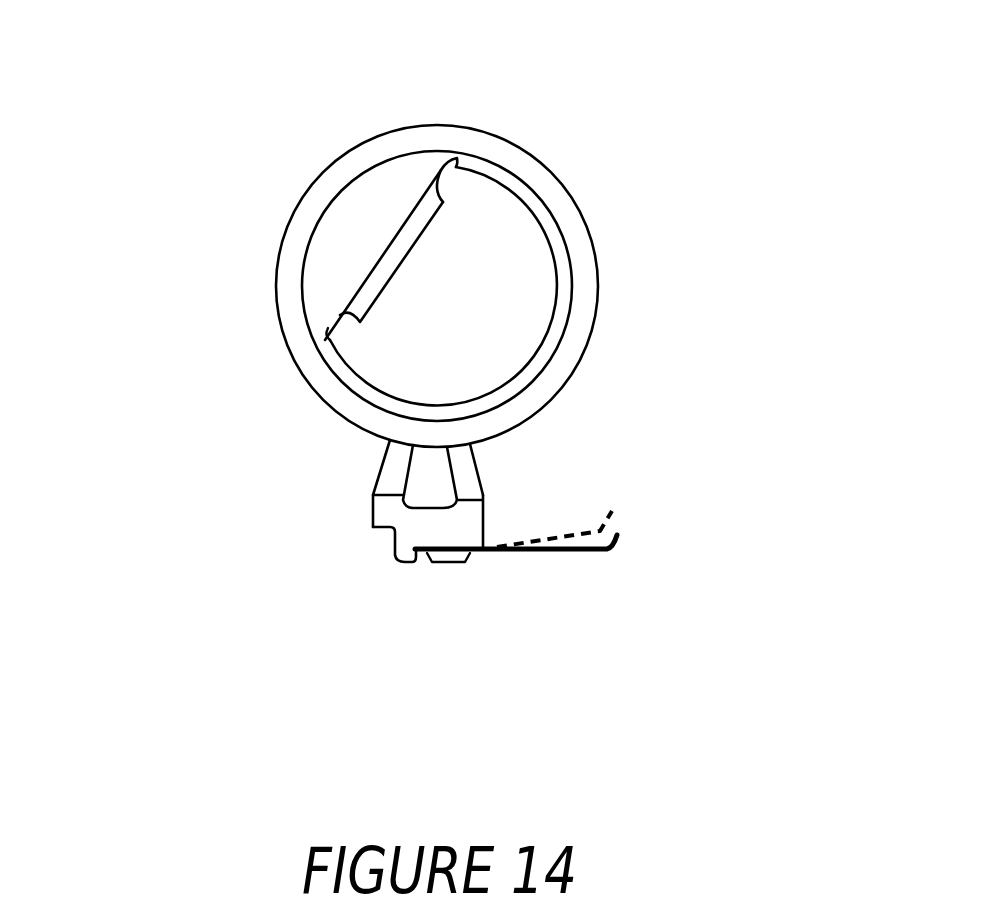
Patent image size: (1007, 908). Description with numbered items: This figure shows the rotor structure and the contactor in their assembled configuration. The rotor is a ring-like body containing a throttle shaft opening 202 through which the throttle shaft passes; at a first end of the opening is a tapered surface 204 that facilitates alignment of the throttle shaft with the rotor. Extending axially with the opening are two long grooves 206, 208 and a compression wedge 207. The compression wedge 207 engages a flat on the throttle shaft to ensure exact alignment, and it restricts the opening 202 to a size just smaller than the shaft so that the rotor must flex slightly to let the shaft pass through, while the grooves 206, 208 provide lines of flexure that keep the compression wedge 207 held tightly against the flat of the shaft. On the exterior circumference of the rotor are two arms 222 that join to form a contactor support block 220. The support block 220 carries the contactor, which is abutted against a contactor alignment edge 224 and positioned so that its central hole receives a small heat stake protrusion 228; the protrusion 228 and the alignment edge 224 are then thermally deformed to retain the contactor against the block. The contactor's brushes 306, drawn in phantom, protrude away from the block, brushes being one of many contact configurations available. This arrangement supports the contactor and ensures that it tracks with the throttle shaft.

The throttle shaft opening 202 is at (540, 348).
The tapered surface 204 is at (342, 250).
The long groove 206 is at (447, 173).
The compression wedge 207 is at (415, 217).
The long groove 208 is at (325, 342).
The contactor support block 220 is at (385, 520).
The arms 222 is at (468, 477).
The contactor alignment edge 224 is at (404, 560).
The heat stake protrusion 228 is at (453, 560).
The brushes 306 is at (573, 550).